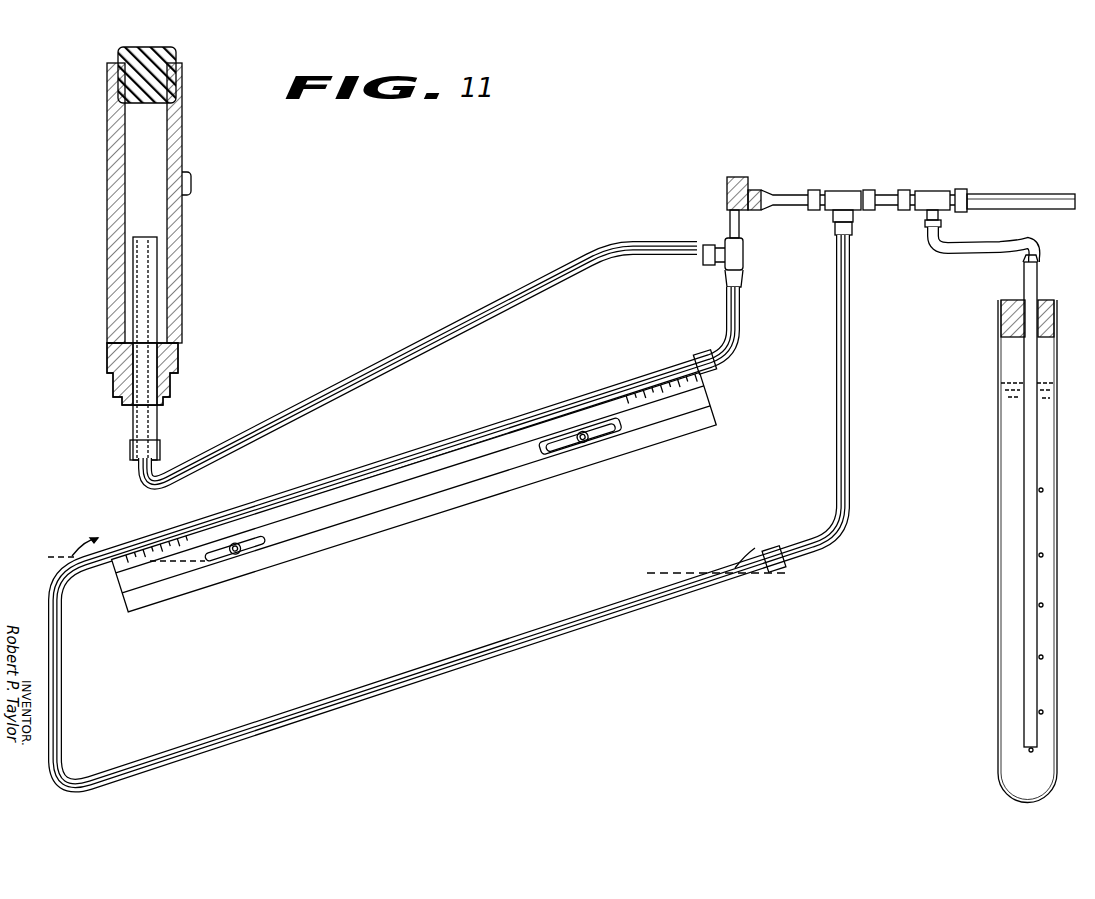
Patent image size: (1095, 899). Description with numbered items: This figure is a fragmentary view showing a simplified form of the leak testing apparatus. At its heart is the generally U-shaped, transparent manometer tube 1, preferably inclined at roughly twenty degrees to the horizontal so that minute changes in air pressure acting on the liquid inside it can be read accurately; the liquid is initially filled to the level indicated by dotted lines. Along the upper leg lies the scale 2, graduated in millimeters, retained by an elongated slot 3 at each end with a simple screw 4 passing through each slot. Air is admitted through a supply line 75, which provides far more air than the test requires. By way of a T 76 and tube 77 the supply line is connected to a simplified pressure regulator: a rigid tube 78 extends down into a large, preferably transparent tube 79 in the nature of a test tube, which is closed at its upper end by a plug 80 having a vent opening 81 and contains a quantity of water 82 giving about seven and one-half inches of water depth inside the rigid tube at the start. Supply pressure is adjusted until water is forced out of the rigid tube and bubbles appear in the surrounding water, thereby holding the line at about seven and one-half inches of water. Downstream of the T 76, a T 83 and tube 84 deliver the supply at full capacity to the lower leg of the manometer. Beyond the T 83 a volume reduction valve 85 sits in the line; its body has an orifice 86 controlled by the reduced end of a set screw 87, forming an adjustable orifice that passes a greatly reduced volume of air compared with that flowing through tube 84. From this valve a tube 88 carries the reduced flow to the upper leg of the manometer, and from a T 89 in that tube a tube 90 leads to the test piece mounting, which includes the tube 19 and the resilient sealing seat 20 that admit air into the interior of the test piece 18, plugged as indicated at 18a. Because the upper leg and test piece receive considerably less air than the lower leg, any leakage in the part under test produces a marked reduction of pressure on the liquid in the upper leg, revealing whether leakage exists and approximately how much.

The manometer tube 1 is at (445, 510).
The scale 2 is at (652, 430).
The elongated slot 3 is at (548, 456).
The screw 4 is at (584, 443).
The test piece 18 is at (184, 255).
The plug 18a is at (118, 78).
The tube 19 is at (133, 424).
The resilient sealing seat 20 is at (165, 368).
The supply line 75 is at (1000, 194).
The T 76 is at (935, 191).
The tube 77 is at (972, 250).
The rigid tube 78 is at (1024, 274).
The large tube 79 is at (1001, 408).
The plug 80 is at (1000, 314).
The vent opening 81 is at (1046, 300).
The water 82 is at (999, 443).
The T 83 is at (846, 191).
The tube 84 is at (850, 315).
The volume reduction valve 85 is at (752, 189).
The orifice 86 is at (742, 213).
The set screw 87 is at (740, 176).
The tube 88 is at (739, 313).
The T 89 is at (729, 263).
The tube 90 is at (515, 294).